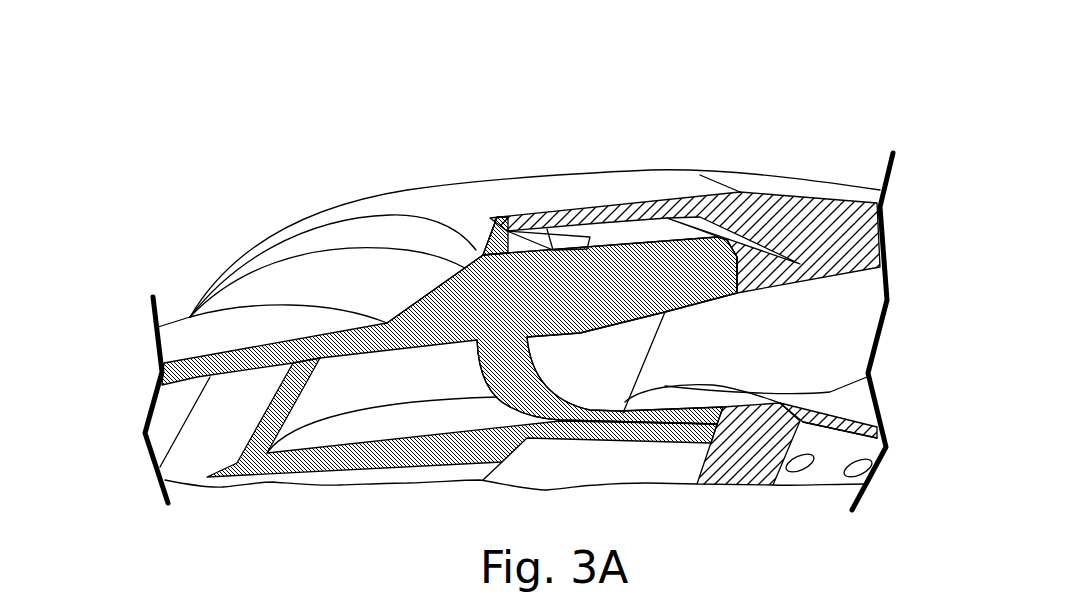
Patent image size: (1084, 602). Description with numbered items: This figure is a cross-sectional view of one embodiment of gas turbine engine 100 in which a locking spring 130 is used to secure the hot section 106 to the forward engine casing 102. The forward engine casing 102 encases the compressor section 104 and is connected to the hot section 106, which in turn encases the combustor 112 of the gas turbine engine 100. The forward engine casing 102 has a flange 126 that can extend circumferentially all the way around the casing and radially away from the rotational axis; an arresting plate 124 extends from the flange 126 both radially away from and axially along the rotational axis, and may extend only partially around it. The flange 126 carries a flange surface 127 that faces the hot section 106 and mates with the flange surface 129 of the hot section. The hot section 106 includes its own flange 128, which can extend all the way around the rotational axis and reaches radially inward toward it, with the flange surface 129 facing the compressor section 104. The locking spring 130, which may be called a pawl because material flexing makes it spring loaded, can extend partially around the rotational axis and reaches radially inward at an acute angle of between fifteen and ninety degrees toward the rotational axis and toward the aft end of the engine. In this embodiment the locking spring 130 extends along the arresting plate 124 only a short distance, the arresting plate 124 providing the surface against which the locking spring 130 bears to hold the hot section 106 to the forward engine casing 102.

The gas turbine engine 100 is at (829, 97).
The forward engine casing 102 is at (182, 333).
The compressor section 104 is at (156, 275).
The hot section 106 is at (629, 176).
The combustor 112 is at (858, 448).
The arresting plate 124 is at (628, 276).
The flange 126 is at (460, 247).
The flange surface 127 is at (477, 245).
The flange 128 is at (514, 216).
The flange surface 129 is at (494, 214).
The locking spring 130 is at (560, 229).